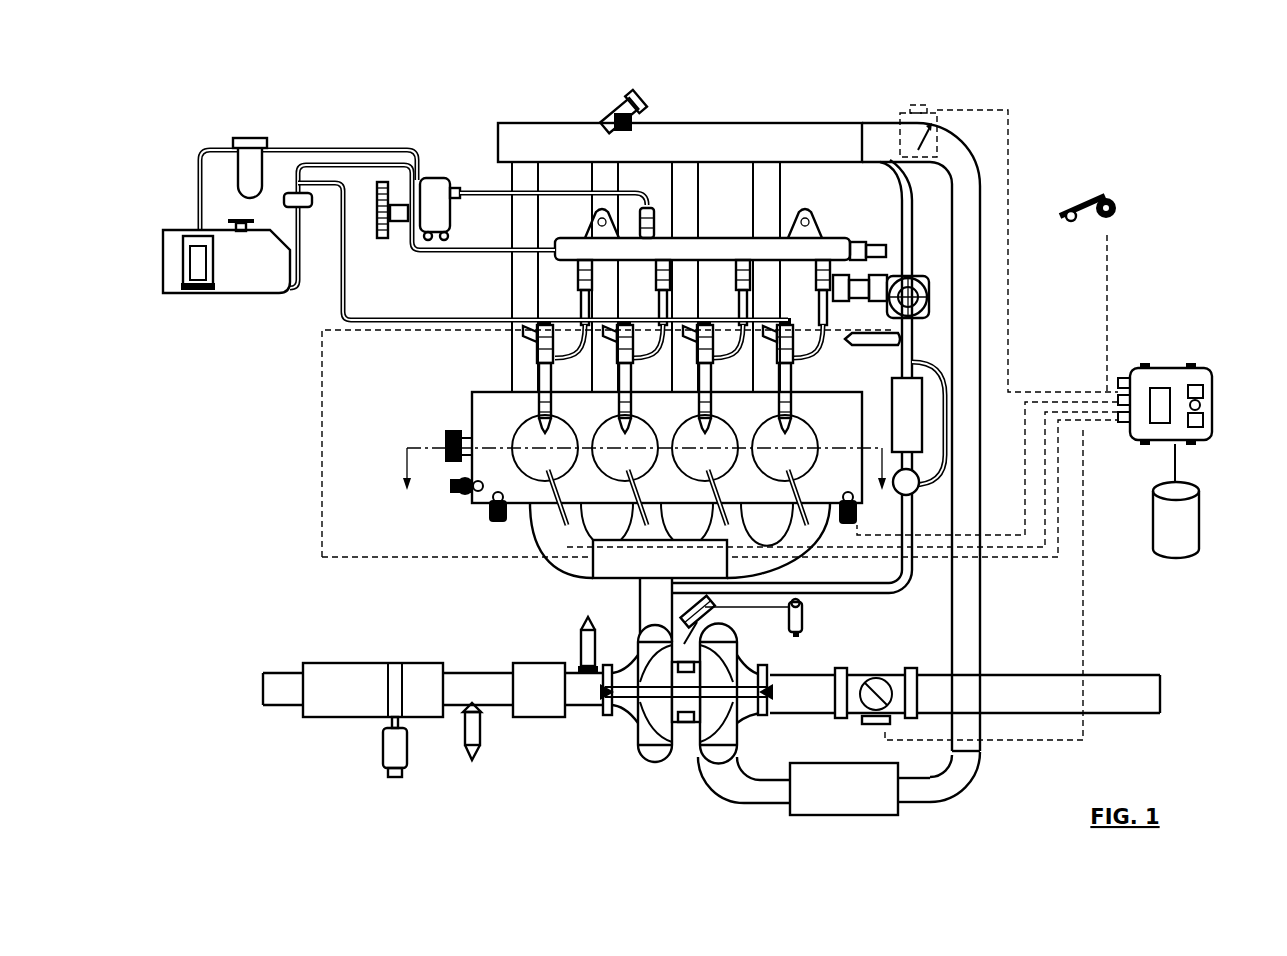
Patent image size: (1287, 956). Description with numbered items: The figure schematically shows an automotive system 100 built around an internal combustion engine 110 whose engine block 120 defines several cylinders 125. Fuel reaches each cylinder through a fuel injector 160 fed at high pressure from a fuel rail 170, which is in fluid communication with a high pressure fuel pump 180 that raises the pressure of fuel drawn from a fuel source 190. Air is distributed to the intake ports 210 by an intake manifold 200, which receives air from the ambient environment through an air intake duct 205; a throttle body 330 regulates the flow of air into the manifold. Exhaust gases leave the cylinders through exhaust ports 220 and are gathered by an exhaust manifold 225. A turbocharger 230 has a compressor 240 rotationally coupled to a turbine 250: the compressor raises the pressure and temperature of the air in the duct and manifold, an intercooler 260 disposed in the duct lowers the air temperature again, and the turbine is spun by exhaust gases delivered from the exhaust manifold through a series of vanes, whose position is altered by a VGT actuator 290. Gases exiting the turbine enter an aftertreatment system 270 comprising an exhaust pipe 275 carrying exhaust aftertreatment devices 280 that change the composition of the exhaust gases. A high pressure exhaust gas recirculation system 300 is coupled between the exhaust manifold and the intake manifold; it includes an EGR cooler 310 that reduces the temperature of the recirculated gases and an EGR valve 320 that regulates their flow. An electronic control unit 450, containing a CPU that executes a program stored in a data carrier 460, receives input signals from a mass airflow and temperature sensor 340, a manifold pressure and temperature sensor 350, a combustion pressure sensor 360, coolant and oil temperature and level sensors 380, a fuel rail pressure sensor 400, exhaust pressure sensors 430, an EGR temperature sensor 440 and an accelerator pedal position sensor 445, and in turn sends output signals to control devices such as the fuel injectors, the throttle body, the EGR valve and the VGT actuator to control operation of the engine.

The automotive system 100 is at (393, 102).
The internal combustion engine 110 is at (797, 107).
The engine block 120 is at (470, 401).
The cylinder 125 is at (805, 425).
The fuel injector 160 is at (540, 348).
The fuel rail 170 is at (570, 250).
The high pressure fuel pump 180 is at (443, 177).
The fuel source 190 is at (255, 272).
The intake manifold 200 is at (690, 145).
The air intake duct 205 is at (970, 640).
The intake port 210 is at (520, 395).
The exhaust port 220 is at (530, 520).
The exhaust manifold 225 is at (613, 580).
The turbocharger 230 is at (645, 774).
The compressor 240 is at (720, 727).
The turbine 250 is at (652, 720).
The intercooler 260 is at (873, 798).
The aftertreatment system 270 is at (343, 641).
The exhaust pipe 275 is at (280, 690).
The exhaust aftertreatment device 280 is at (335, 695).
The VGT actuator 290 is at (712, 614).
The high pressure exhaust gas recirculation system 300 is at (870, 603).
The EGR cooler 310 is at (907, 433).
The EGR valve 320 is at (917, 268).
The throttle body 330 is at (920, 108).
The mass airflow and temperature sensor 340 is at (868, 718).
The manifold pressure and temperature sensor 350 is at (618, 105).
The combustion pressure sensor 360 is at (563, 527).
The coolant and oil temperature and level sensors 380 is at (493, 502).
The fuel rail pressure sensor 400 is at (883, 250).
The exhaust pressure sensors 430 is at (395, 778).
The EGR temperature sensor 440 is at (912, 330).
The accelerator pedal position sensor 445 is at (1110, 195).
The electronic control unit 450 is at (1171, 368).
The data carrier 460 is at (1172, 540).